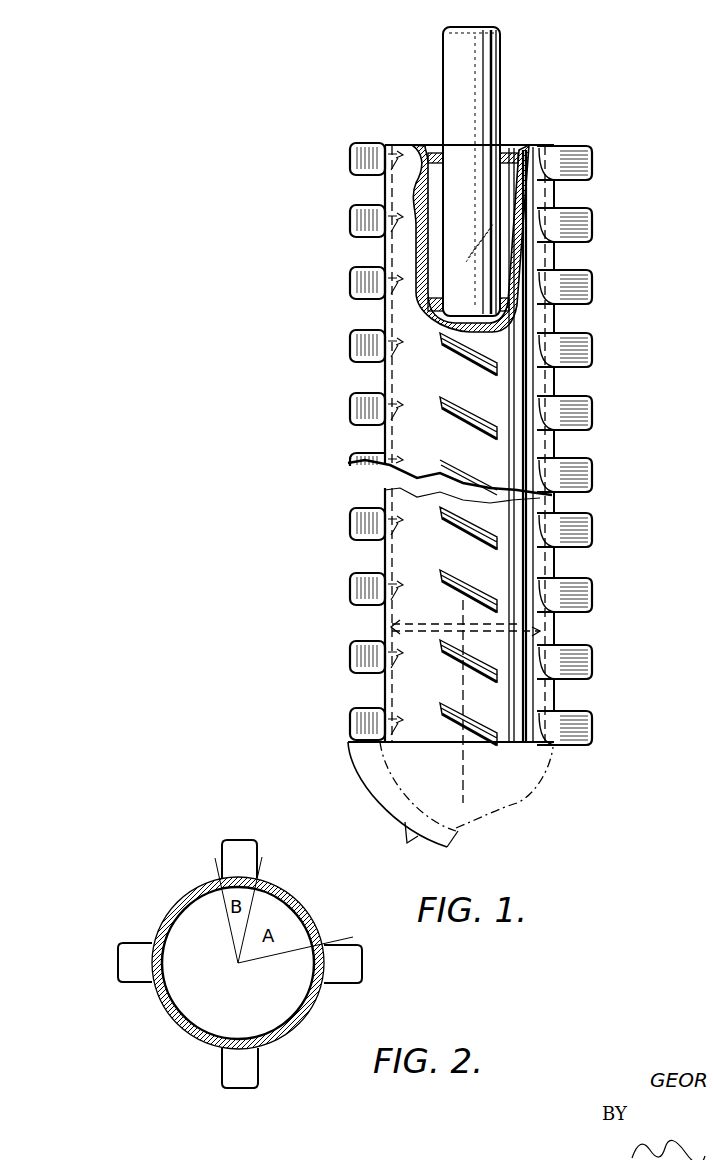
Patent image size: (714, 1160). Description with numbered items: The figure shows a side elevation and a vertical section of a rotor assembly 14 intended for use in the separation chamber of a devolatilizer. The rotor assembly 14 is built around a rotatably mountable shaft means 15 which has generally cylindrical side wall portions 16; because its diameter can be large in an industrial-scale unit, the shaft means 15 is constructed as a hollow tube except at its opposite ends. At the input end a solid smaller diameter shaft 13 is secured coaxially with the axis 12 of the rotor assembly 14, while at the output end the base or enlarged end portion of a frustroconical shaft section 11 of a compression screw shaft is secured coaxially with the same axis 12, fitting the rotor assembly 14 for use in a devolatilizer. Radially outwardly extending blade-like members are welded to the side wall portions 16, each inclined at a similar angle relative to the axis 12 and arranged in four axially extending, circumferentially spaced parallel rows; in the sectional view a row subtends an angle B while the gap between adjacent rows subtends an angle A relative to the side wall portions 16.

The frustroconical shaft section 11 is at (547, 767).
The axis 12 is at (467, 676).
The solid smaller diameter shaft 13 is at (455, 75).
The rotor assembly 14 is at (346, 320).
The shaft means 15 is at (402, 254).
The cylindrical side wall portions 16 is at (413, 192).